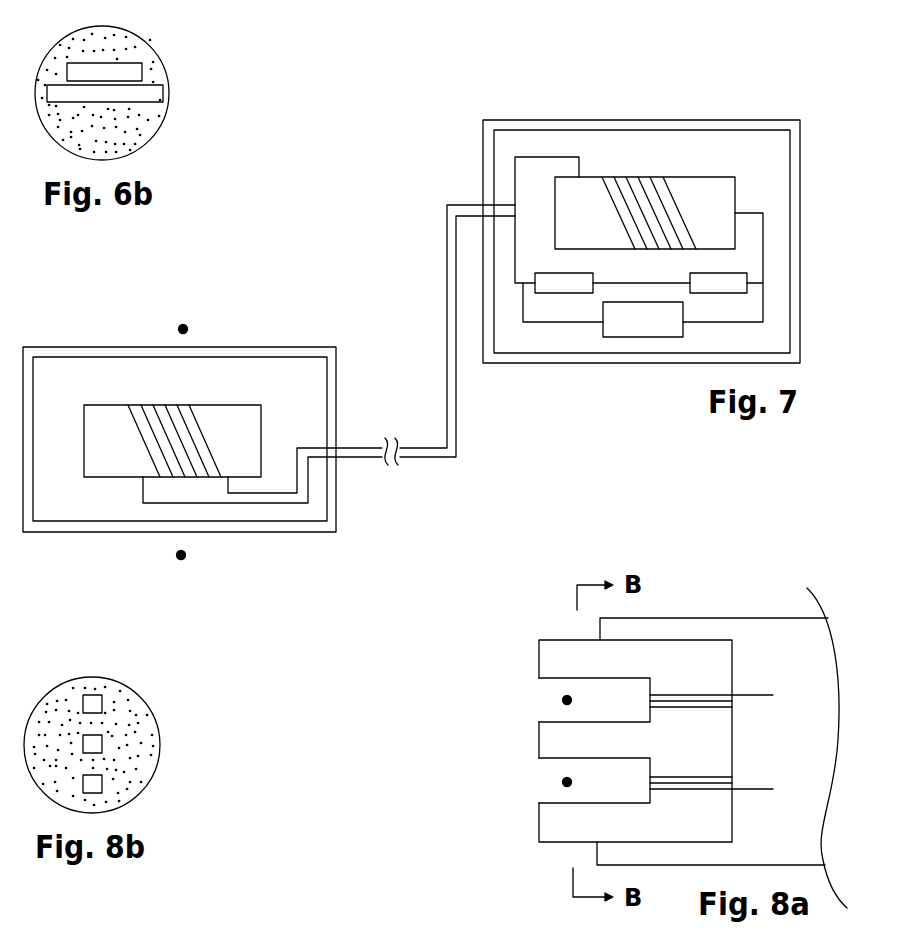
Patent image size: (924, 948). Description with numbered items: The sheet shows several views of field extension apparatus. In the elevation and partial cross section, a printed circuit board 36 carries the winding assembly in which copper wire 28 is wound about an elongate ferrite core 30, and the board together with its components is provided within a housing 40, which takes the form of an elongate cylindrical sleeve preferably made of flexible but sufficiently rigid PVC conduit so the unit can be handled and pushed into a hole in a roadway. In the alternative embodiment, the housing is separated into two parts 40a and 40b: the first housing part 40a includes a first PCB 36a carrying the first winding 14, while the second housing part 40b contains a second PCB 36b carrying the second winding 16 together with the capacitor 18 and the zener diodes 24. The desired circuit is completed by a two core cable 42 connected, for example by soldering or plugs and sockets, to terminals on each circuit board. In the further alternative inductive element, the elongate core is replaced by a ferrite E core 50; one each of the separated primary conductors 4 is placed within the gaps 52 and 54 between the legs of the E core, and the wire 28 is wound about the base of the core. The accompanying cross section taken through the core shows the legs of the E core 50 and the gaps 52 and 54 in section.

In FIG. 7, the contact point / dot 4 is at (183, 329).
In FIG. 8A, the contact point / dot 4 is at (567, 700).
In FIG. 7, the coil 14 is at (123, 477).
In FIG. 7, the coil 16 is at (669, 177).
In FIG. 7, the capacitor 18 is at (643, 319).
In FIG. 7, the zener diodes 24 is at (727, 283).
In FIG. 8A, the copper wire 28 is at (697, 693).
In FIG. 6B, the ferrite core 30 is at (135, 72).
In FIG. 6B, the printed circuit board 36 is at (150, 94).
In FIG. 7, the first PCB 36a is at (180, 439).
In FIG. 7, the second PCB 36b is at (642, 241).
In FIG. 6B, the housing 40 is at (163, 122).
In FIG. 8A, the housing 40 is at (787, 618).
In FIG. 7, the first housing part 40a is at (268, 347).
In FIG. 7, the second housing part 40b is at (525, 363).
In FIG. 7, the two core cable 42 is at (357, 460).
In FIG. 8A, the ferrite E core 50 is at (587, 652).
In FIG. 8A, the gap 52 is at (600, 697).
In FIG. 8B, the gap 52 is at (102, 723).
In FIG. 8A, the gap 54 is at (603, 788).
In FIG. 8B, the gap 54 is at (98, 765).